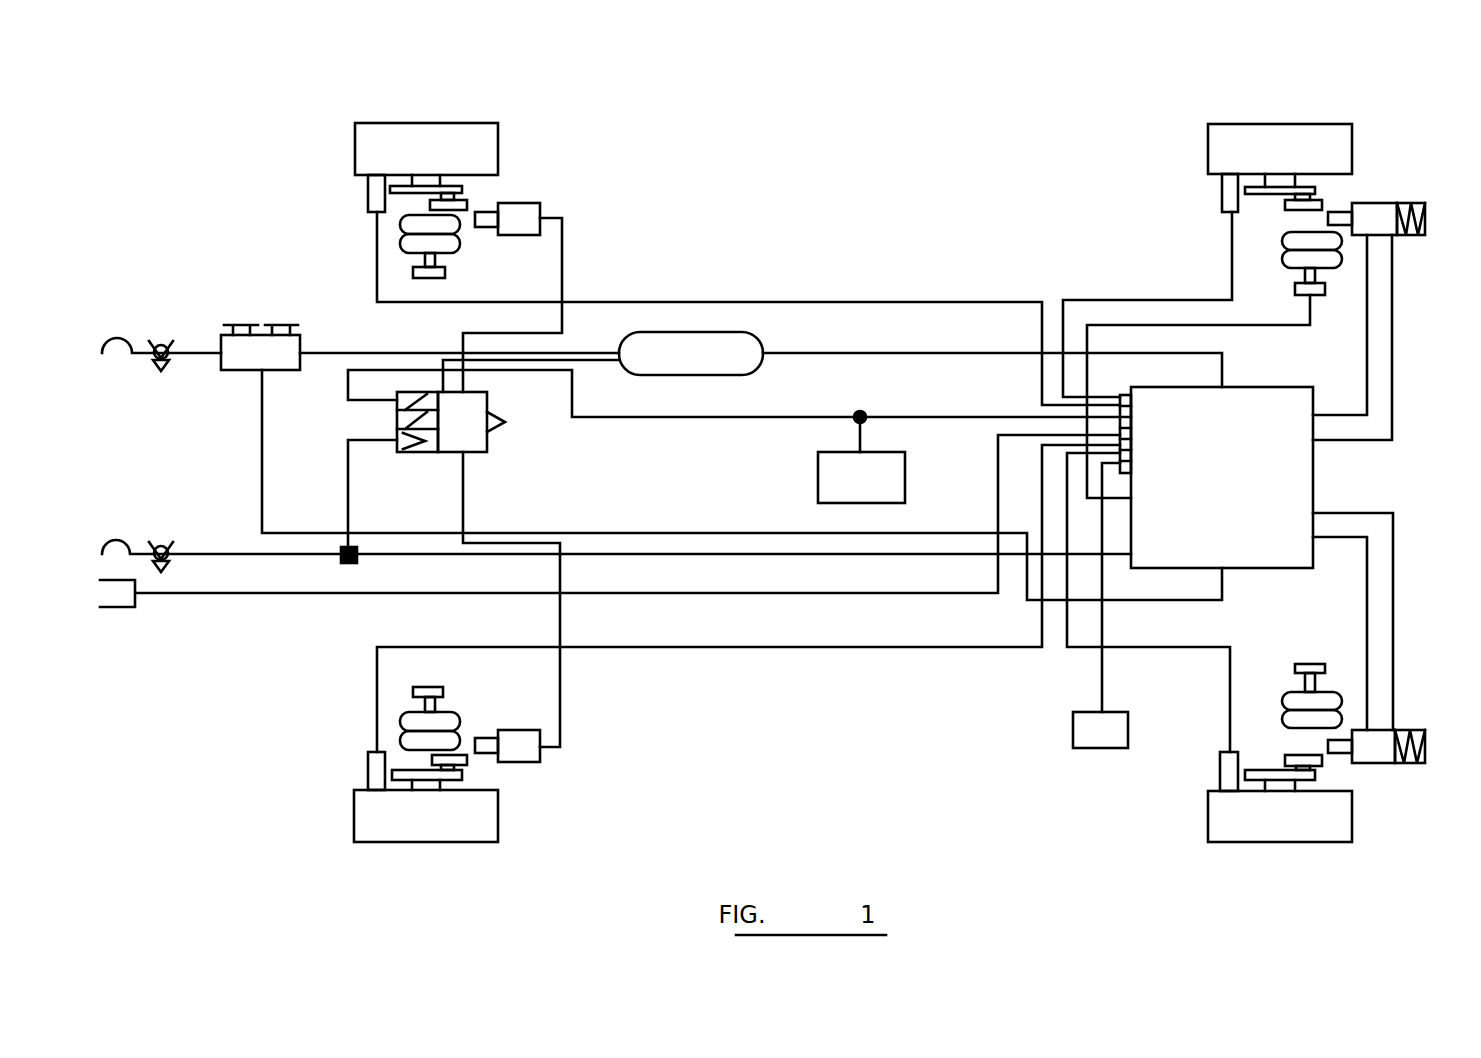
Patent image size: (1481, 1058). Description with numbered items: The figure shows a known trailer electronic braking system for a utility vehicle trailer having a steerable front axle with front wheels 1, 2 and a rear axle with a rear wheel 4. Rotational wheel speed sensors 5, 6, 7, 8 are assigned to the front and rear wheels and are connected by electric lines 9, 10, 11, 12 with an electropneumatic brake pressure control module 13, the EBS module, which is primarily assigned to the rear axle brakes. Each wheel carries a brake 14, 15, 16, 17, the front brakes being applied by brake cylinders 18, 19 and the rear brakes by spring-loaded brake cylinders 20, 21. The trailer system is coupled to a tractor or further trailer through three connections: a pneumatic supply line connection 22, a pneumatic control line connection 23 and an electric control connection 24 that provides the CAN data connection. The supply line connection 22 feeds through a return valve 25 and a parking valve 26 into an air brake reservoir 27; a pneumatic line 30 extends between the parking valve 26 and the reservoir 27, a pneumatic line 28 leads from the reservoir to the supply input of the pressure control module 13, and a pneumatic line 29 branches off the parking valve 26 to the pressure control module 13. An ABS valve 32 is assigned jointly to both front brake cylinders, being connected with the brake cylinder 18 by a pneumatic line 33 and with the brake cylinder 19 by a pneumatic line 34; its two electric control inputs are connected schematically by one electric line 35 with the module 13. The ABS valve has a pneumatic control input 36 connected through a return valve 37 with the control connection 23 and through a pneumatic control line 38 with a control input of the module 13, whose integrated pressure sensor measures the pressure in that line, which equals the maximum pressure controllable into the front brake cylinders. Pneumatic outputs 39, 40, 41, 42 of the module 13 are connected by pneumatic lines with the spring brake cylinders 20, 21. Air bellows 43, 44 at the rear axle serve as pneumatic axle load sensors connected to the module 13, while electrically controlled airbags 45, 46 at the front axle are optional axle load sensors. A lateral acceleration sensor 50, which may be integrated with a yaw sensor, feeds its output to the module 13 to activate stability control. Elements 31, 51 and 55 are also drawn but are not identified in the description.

The front wheel 1 is at (428, 148).
The front wheel 2 is at (1282, 148).
The rear wheel 4 is at (1282, 825).
The rotational wheel speed sensor 5 is at (375, 190).
The rotational wheel speed sensor 6 is at (375, 768).
The rotational wheel speed sensor 7 is at (1228, 193).
The rotational wheel speed sensor 8 is at (1222, 767).
The electric line 9 is at (783, 302).
The electric line 10 is at (775, 647).
The electric line 11 is at (1232, 227).
The electric line 12 is at (1232, 722).
The electropneumatic brake pressure control module 13 is at (1268, 545).
The brake 14 is at (400, 198).
The brake 15 is at (462, 775).
The brake 16 is at (1318, 198).
The brake 17 is at (1318, 770).
The brake cylinder 18 is at (540, 215).
The brake cylinder 19 is at (522, 752).
The spring-loaded brake cylinder 20 is at (1392, 213).
The spring-loaded brake cylinder 21 is at (1385, 760).
The pneumatic supply line connection 22 is at (148, 352).
The pneumatic control line connection 23 is at (148, 554).
The electric control connection 24 is at (215, 593).
The return valve 25 is at (165, 345).
The parking valve 26 is at (237, 372).
The air brake reservoir 27 is at (690, 345).
The pneumatic line 28 is at (857, 353).
The pneumatic line 29 is at (717, 533).
The pneumatic line 30 is at (330, 353).
The solenoid valve 31 is at (432, 380).
The ABS valve 32 is at (470, 448).
The pneumatic line 33 is at (562, 248).
The pneumatic line 34 is at (562, 692).
The electric line 35 is at (665, 420).
The pneumatic control input 36 is at (366, 440).
The return valve 37 is at (165, 546).
The pneumatic control line 38 is at (773, 554).
The pneumatic output 39 is at (1380, 415).
The pneumatic output 40 is at (1385, 440).
The pneumatic output 41 is at (1395, 513).
The pneumatic output 42 is at (1385, 537).
The air bellows 43 is at (1290, 258).
The air bellows 44 is at (1290, 705).
The airbag 45 is at (412, 247).
The airbag 46 is at (455, 723).
The lateral acceleration sensor 50 is at (1100, 738).
The sensor 51 is at (848, 493).
The supply line 55 is at (1298, 326).